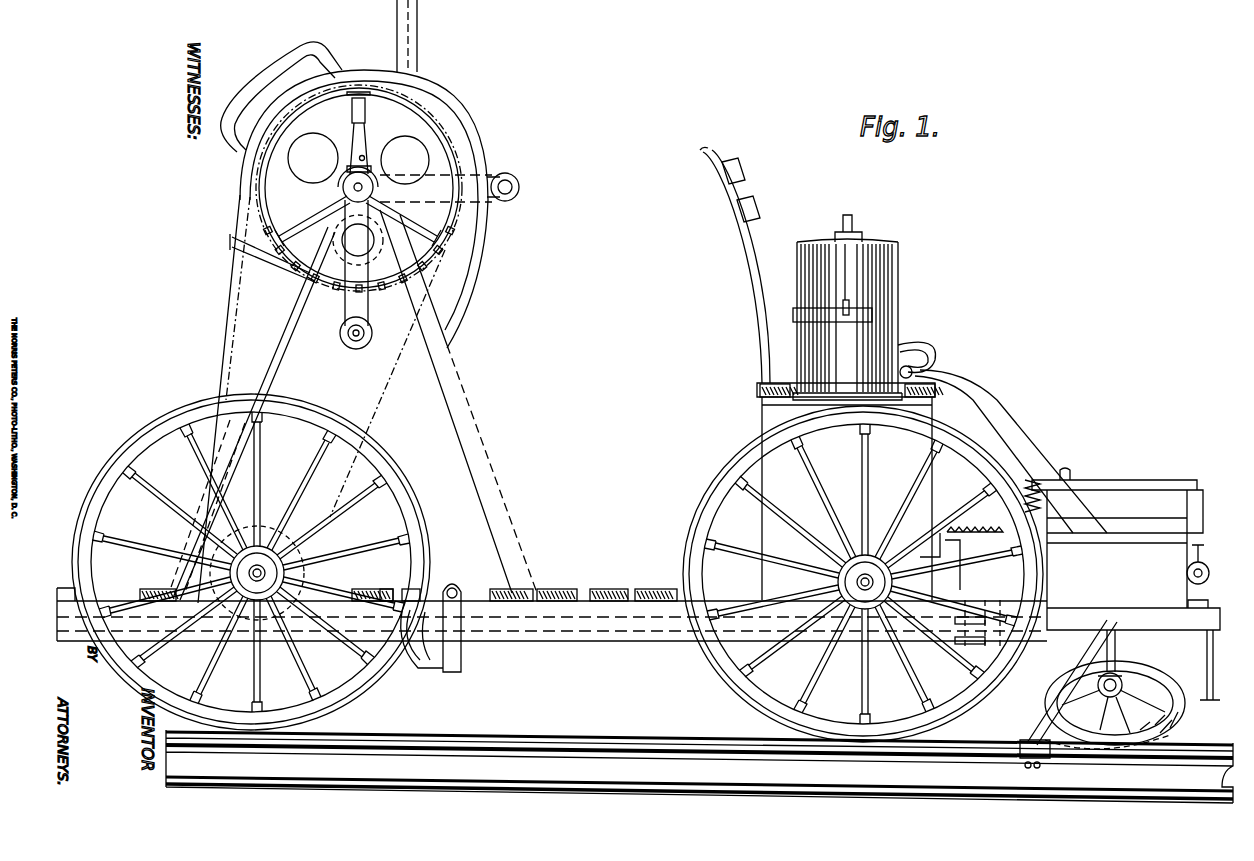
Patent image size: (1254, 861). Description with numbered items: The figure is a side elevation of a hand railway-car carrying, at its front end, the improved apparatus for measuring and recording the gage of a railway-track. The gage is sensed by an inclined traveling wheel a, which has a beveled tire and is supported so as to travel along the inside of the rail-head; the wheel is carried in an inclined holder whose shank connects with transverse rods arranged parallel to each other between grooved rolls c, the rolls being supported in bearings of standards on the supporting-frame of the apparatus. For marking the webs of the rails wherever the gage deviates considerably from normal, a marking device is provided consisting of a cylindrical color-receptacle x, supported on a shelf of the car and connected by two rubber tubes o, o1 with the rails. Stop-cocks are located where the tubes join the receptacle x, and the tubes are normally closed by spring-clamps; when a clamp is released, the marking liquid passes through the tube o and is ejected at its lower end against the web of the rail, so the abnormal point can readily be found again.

The cylindrical color-receptacle x is at (864, 307).
The rubber tube o is at (1003, 440).
The rubber tube o1 is at (1022, 446).
The grooved rolls c is at (1126, 549).
The inclined wheel a is at (1207, 577).